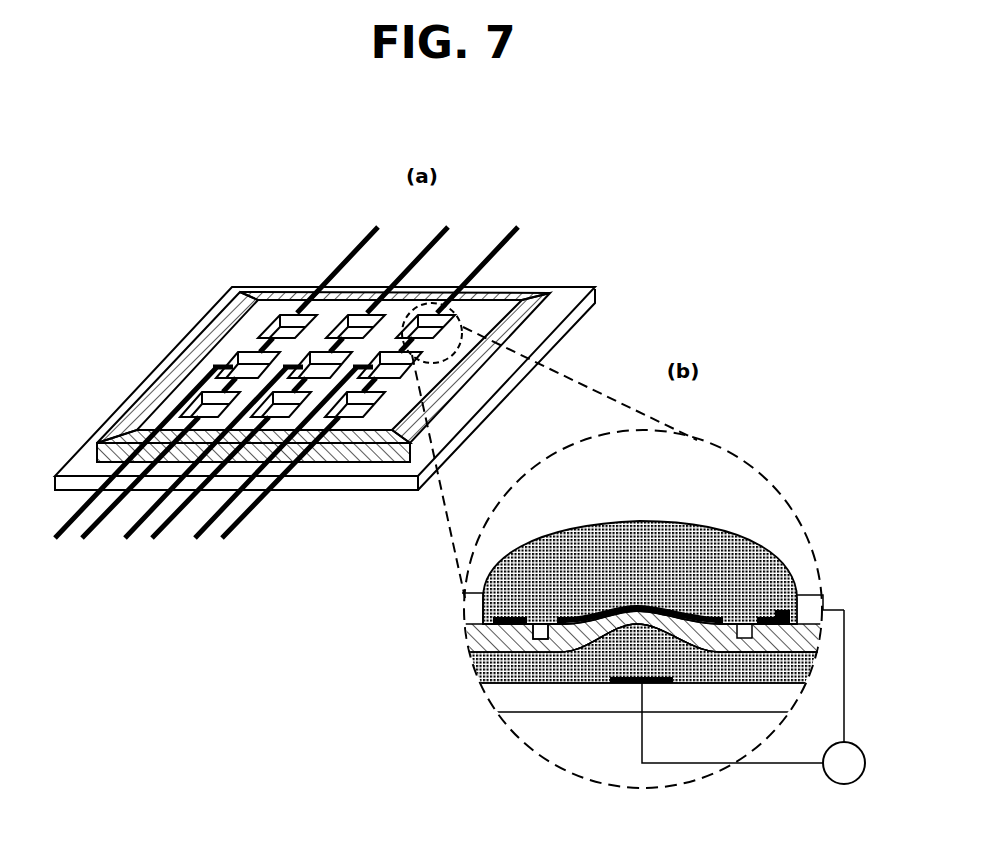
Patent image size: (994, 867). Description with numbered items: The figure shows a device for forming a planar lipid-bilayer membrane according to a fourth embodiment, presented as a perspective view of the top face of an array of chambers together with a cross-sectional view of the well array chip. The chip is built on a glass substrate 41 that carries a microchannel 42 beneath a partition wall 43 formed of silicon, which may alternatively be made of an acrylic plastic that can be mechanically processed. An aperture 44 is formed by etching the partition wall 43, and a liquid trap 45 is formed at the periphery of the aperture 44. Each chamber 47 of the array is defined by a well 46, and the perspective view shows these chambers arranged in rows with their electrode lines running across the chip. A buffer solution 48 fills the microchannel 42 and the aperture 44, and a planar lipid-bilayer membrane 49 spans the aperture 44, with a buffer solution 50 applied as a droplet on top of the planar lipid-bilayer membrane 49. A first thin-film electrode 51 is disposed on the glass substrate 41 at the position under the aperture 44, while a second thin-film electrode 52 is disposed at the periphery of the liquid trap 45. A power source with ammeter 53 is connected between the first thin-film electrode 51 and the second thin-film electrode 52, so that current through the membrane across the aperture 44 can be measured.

The glass substrate 41 is at (597, 293).
The microchannel 42 is at (455, 674).
The partition wall 43 is at (553, 295).
The aperture 44 is at (640, 633).
The liquid trap 45 is at (538, 635).
The well 46 is at (493, 337).
The chamber 47 is at (294, 302).
The buffer solution 48 is at (798, 670).
The planar lipid-bilayer membrane 49 is at (701, 617).
The buffer solution droplet 50 is at (563, 540).
The first thin-film electrode 51 is at (227, 540).
The second thin-film electrode 52 is at (133, 540).
The power source with ammeter 53 is at (855, 746).